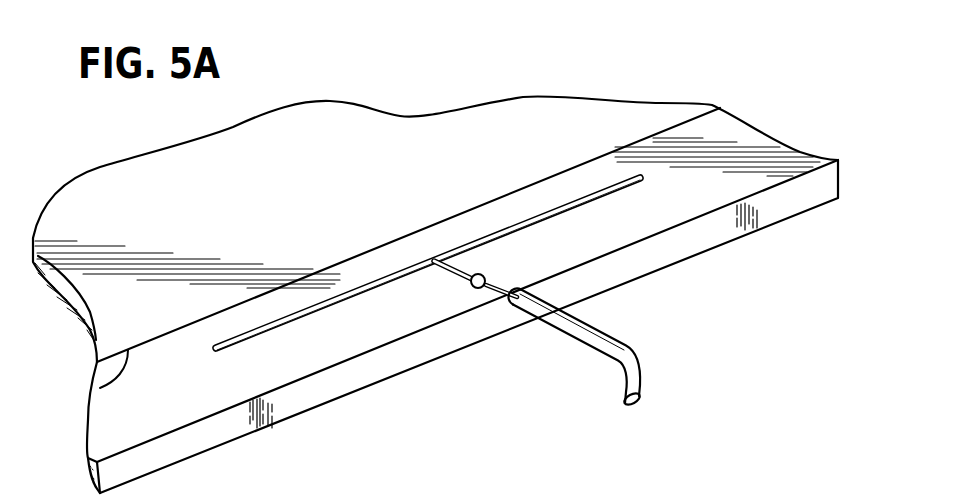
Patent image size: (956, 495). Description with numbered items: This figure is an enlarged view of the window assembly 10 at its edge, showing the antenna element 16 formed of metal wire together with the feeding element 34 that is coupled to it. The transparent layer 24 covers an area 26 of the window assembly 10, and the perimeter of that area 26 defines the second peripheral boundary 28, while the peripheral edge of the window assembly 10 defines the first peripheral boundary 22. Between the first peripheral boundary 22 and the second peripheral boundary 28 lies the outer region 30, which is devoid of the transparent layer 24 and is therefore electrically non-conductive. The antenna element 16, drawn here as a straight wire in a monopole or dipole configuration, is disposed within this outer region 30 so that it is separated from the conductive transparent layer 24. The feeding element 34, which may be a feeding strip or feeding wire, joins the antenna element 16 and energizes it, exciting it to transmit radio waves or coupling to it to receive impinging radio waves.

The window assembly 10 is at (442, 96).
The antenna element 16 is at (569, 205).
The first peripheral boundary 22 is at (160, 437).
The transparent layer 24 is at (118, 297).
The area 26 is at (137, 193).
The second peripheral boundary 28 is at (100, 388).
The outer region 30 is at (740, 155).
The feeding element 34 is at (617, 358).